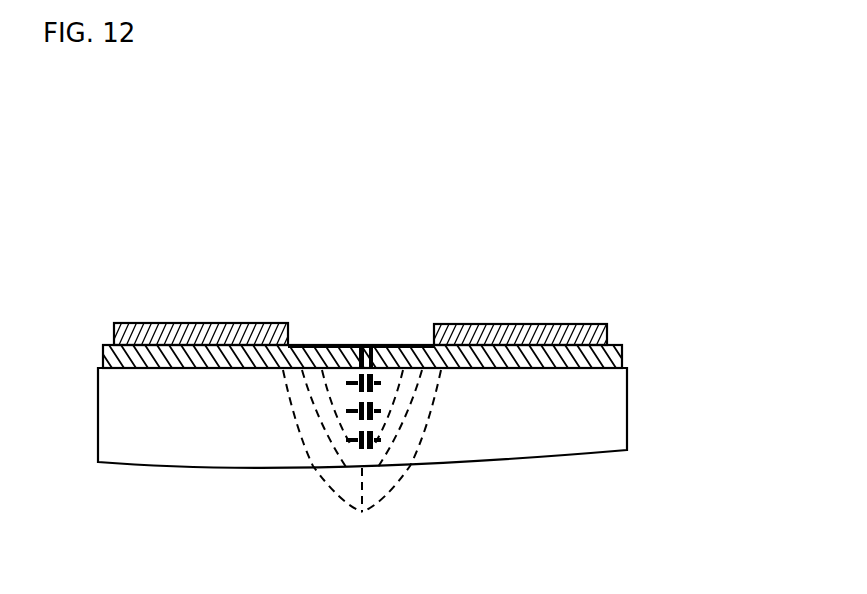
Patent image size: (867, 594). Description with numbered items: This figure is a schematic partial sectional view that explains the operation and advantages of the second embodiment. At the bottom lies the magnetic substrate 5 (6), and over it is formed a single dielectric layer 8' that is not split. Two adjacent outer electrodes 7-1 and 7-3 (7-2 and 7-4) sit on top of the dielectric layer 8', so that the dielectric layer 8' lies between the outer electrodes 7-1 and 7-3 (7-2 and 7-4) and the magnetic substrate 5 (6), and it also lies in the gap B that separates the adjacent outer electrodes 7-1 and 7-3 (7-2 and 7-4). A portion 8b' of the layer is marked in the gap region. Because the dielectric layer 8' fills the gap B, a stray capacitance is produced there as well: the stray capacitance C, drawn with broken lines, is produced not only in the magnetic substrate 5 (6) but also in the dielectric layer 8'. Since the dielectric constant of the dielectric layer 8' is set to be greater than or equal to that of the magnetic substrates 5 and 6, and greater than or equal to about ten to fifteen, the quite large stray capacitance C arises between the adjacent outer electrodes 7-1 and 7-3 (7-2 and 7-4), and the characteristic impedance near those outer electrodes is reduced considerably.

The magnetic substrate 5 is at (607, 423).
The magnetic substrate 6 is at (444, 418).
The outer electrode 7-1 is at (152, 323).
The outer electrode 7-2 is at (201, 243).
The outer electrode 7-3 is at (533, 323).
The outer electrode 7-4 is at (584, 235).
The dielectric layer 8' is at (422, 344).
The polarized portion of piezoelectric layer 8b' is at (407, 324).
The gap B is at (357, 312).
The stray capacitance C is at (362, 463).